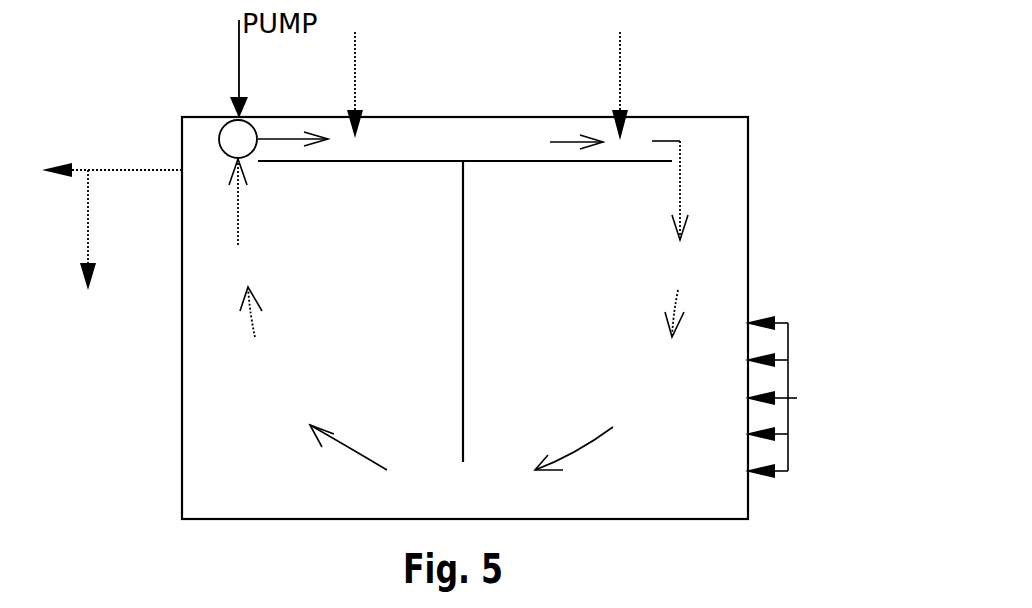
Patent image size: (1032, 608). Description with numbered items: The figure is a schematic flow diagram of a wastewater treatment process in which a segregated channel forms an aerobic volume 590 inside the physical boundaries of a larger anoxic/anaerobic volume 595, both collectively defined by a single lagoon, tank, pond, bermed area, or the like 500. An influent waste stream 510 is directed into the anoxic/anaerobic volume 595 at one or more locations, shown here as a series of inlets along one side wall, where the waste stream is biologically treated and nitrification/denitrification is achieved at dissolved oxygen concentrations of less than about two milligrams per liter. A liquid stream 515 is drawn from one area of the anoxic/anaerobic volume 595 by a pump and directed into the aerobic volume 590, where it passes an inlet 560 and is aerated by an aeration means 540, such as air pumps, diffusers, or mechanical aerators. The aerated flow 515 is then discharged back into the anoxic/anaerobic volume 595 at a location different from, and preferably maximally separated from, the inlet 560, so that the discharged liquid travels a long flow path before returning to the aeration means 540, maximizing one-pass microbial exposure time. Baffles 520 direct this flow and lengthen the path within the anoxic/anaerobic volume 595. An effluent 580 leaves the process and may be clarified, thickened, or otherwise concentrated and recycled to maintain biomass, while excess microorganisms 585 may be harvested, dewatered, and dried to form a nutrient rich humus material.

The lagoon, tank, pond, bermed area, or the like 500 is at (760, 114).
The influent waste stream 510 is at (815, 397).
The liquid stream 515 is at (269, 248).
The baffles 520 is at (493, 303).
The aeration means 540 is at (539, 80).
The inlet 560 is at (465, 182).
The effluent 580 is at (112, 193).
The excess microorganisms 585 is at (72, 250).
The aerobic volume 590 is at (534, 184).
The anoxic/anaerobic volume 595 is at (461, 469).